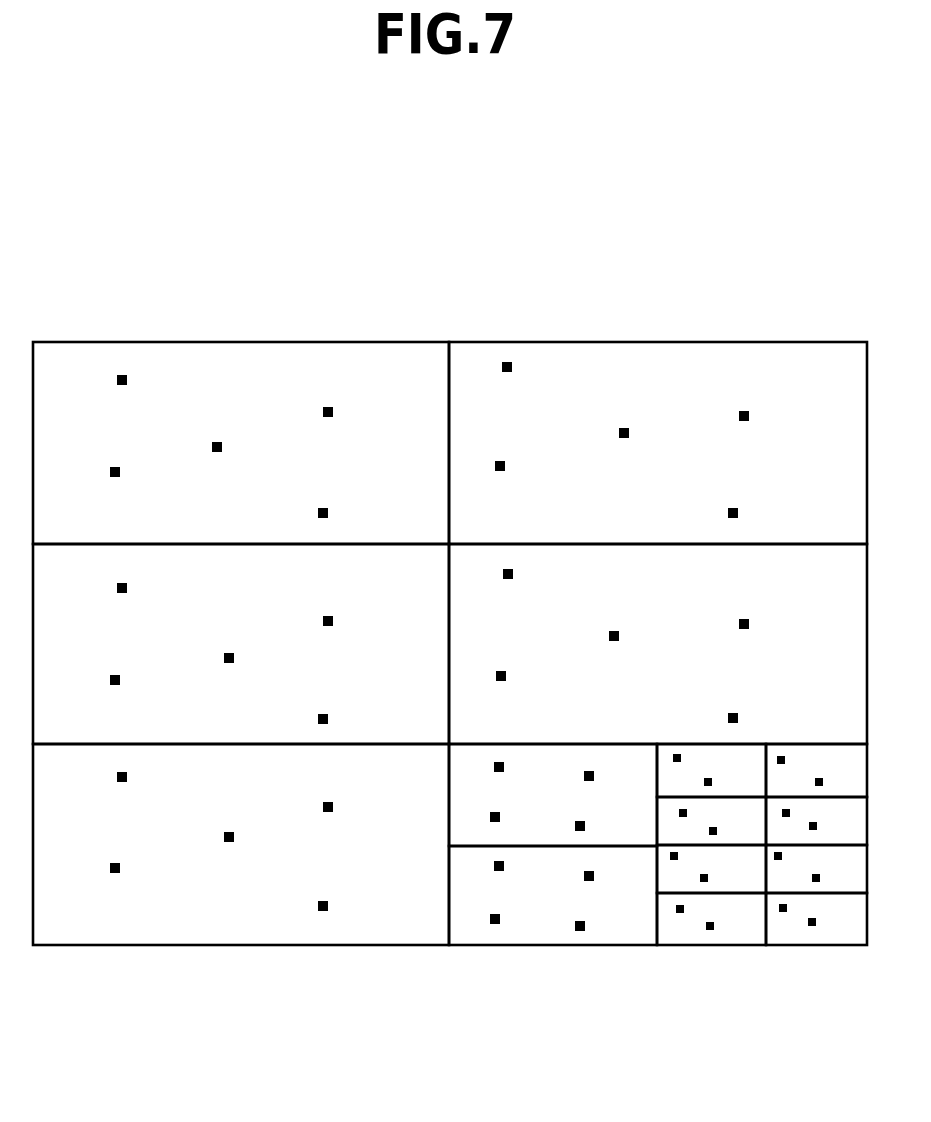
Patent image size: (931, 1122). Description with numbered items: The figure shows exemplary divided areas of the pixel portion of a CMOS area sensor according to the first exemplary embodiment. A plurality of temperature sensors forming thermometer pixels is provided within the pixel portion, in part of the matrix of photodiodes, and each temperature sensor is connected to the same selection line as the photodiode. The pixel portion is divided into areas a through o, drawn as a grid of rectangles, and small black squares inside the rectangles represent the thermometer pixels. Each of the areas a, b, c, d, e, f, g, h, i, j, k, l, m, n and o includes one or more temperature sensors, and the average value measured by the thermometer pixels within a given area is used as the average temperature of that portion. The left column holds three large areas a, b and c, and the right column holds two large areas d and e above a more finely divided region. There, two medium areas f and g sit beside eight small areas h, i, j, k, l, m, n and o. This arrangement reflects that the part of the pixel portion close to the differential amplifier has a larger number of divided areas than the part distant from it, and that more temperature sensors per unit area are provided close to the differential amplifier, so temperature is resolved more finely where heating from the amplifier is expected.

The divided area a is at (241, 443).
The divided area b is at (241, 644).
The divided area c is at (241, 844).
The divided area d is at (658, 443).
The divided area e is at (658, 644).
The divided area f is at (553, 795).
The divided area g is at (553, 895).
The divided area h is at (711, 770).
The divided area i is at (711, 821).
The divided area j is at (816, 770).
The divided area k is at (816, 821).
The divided area l is at (711, 869).
The divided area m is at (711, 919).
The divided area n is at (816, 869).
The divided area o is at (816, 919).